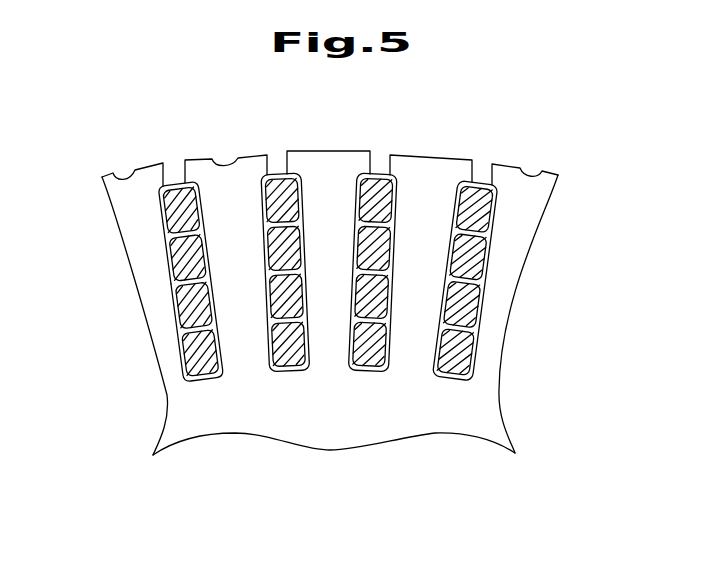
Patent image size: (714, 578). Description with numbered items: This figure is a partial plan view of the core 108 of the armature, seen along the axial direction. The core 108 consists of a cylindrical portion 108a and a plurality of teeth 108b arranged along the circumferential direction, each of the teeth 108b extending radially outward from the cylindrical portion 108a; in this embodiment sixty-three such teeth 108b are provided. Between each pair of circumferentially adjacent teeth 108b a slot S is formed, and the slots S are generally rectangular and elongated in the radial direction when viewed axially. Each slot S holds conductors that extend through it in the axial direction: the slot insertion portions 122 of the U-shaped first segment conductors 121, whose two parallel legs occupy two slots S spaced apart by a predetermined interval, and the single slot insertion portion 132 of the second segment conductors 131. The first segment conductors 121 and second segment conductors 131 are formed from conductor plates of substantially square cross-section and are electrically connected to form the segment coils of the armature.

The core 108 is at (480, 431).
The cylindrical portion 108a is at (330, 441).
The teeth 108b is at (330, 173).
The slot S is at (278, 174).
The first segment conductor 121 is at (178, 283).
The slot insertion portion 122 is at (189, 303).
The second segment conductor 131 is at (187, 370).
The slot insertion portion 132 is at (198, 352).